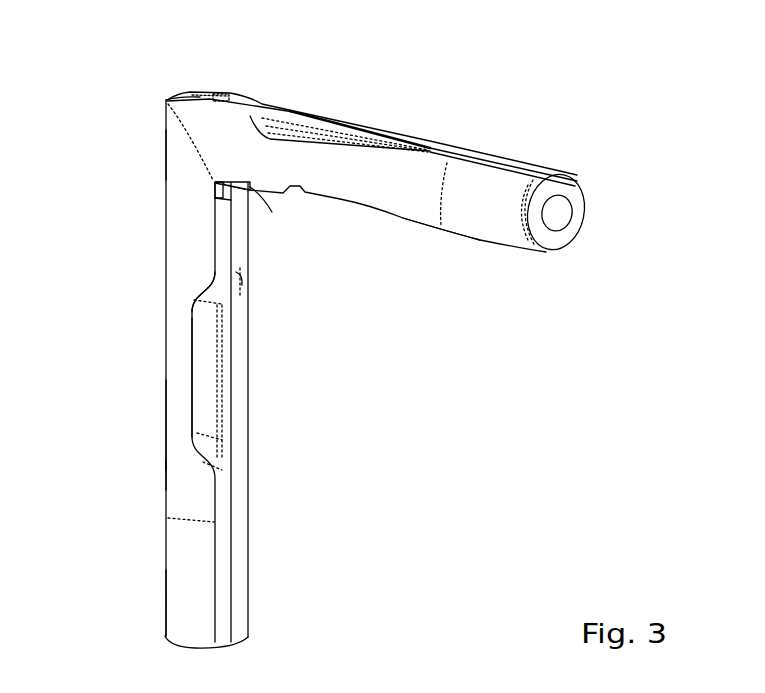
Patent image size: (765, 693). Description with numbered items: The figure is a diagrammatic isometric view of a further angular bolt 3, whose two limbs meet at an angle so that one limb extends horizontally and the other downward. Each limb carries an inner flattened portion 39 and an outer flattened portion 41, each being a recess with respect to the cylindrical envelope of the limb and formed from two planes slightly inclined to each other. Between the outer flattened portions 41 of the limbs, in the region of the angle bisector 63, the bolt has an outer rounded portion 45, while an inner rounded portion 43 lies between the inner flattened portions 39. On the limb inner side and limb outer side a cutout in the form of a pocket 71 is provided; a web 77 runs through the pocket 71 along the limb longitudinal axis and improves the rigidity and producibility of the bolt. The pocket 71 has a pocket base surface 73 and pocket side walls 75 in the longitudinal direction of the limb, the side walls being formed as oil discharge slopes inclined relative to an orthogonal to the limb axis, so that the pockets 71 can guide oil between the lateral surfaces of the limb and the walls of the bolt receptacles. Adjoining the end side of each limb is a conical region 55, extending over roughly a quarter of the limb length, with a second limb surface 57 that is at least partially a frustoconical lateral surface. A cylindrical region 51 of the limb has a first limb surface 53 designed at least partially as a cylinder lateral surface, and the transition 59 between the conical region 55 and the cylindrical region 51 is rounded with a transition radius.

The angular bolt 3 is at (551, 95).
The inner flattened portion 39 is at (557, 244).
The outer flattened portion 41 is at (230, 102).
The inner rounded portion 43 is at (252, 205).
The outer rounded portion 45 is at (168, 102).
The cylindrical region 51 is at (157, 426).
The first limb surface 53 is at (165, 473).
The conical region 55 is at (164, 603).
The second limb surface 57 is at (165, 587).
The transition 59 is at (168, 518).
The angle bisector 63 is at (180, 153).
The pocket 71 is at (331, 110).
The pocket base surface 73 is at (188, 380).
The pocket side walls 75 is at (200, 294).
The web 77 is at (370, 133).